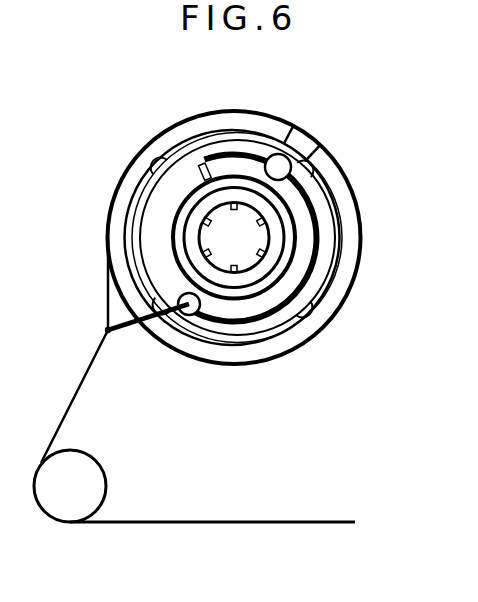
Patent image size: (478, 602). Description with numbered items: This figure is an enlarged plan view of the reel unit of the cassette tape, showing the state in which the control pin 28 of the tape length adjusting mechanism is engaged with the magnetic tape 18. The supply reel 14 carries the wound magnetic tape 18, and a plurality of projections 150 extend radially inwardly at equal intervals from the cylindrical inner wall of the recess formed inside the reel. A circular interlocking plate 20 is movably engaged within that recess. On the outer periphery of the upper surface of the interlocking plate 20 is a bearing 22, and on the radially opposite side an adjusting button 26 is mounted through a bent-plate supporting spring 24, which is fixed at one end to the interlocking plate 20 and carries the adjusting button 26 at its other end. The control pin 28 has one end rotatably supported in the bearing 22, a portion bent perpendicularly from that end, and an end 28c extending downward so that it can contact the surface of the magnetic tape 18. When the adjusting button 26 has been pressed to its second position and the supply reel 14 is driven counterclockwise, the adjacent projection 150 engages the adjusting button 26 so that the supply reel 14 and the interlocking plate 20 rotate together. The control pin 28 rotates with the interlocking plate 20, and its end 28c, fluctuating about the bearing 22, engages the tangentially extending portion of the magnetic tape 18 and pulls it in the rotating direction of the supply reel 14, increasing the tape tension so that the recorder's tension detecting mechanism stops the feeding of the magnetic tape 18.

The supply reel 14 is at (155, 157).
The interlocking plate 20 is at (245, 317).
The supporting spring 24 is at (233, 151).
The adjusting button 26 is at (294, 131).
The projection 150 is at (309, 166).
The bearing 22 is at (189, 318).
The control pin 28 is at (137, 328).
The end of the control pin 28c is at (106, 329).
The magnetic tape 18 is at (90, 370).